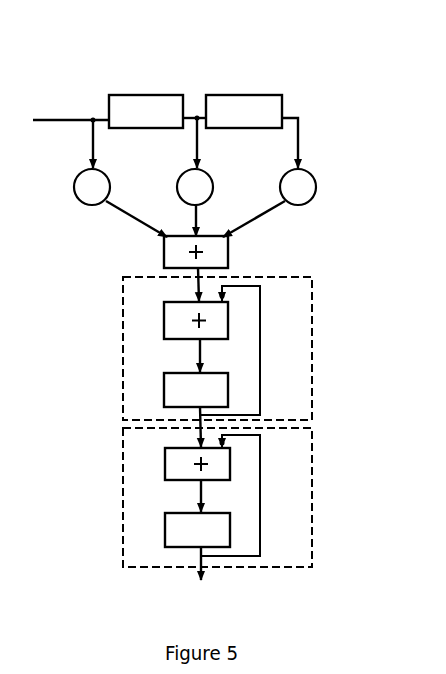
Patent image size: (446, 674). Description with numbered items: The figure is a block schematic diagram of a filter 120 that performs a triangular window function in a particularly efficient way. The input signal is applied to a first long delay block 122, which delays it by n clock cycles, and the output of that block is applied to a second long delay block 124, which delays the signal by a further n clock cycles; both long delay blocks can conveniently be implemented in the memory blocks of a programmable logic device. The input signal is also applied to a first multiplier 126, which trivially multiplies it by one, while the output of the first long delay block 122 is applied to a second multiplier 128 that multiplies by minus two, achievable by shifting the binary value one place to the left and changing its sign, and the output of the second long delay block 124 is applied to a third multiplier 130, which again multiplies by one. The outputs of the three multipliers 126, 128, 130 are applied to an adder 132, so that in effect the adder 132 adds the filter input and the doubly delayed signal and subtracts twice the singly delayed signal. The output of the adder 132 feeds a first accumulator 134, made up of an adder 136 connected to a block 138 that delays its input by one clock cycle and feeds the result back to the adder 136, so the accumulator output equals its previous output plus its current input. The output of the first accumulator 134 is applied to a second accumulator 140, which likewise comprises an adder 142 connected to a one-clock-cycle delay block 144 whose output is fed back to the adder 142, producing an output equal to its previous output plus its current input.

The filter 120 is at (339, 60).
The first long delay block 122 is at (136, 95).
The second long delay block 124 is at (238, 95).
The first multiplier 126 is at (124, 165).
The second multiplier 128 is at (226, 165).
The third multiplier 130 is at (329, 165).
The adder 132 is at (228, 250).
The first accumulator 134 is at (313, 341).
The adder 136 is at (164, 312).
The delay block 138 is at (164, 390).
The second accumulator 140 is at (313, 488).
The adder 142 is at (165, 458).
The delay block 144 is at (165, 525).